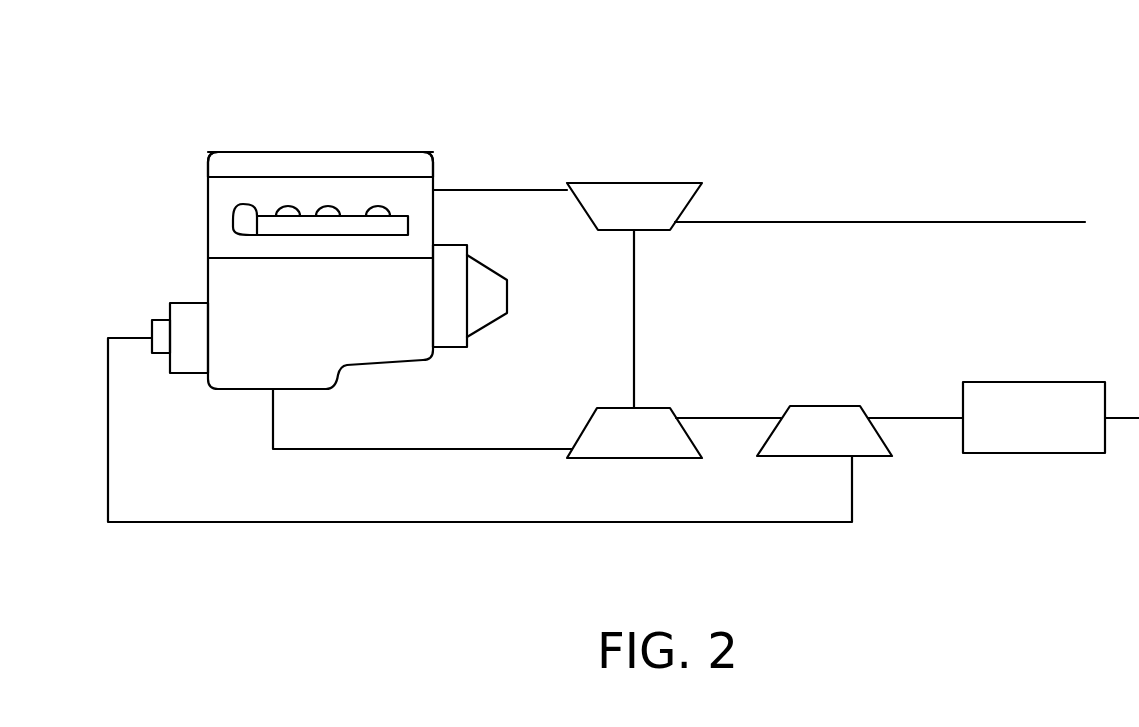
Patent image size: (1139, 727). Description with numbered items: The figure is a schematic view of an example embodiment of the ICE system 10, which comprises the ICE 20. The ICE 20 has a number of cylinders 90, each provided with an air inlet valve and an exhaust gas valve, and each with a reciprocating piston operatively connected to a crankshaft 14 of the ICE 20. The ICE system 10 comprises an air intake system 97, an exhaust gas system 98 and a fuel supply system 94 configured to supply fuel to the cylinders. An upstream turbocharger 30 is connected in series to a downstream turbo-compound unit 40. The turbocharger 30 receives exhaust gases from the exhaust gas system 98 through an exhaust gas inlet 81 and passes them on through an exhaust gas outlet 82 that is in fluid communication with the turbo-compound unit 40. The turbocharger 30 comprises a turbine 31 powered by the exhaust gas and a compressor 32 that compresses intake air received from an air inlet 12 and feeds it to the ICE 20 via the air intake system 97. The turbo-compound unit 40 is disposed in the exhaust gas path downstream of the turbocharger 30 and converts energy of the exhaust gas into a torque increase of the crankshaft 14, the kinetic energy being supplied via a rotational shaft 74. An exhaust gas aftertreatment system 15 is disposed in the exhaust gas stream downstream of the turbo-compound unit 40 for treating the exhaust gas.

The ICE system 10 is at (480, 90).
The air inlet 12 is at (882, 222).
The crankshaft 14 is at (190, 373).
The aftertreatment system 15 is at (1037, 453).
The ICE 20 is at (322, 153).
The turbocharger 30 is at (775, 90).
The turbine 31 is at (637, 458).
The compressor 32 is at (638, 183).
The turbo-compound unit 40 is at (866, 452).
The rotational shaft 74 is at (920, 418).
The exhaust gas inlet 81 is at (552, 449).
The exhaust gas outlet 82 is at (693, 418).
The cylinders 90 is at (248, 167).
The fuel supply system 94 is at (352, 227).
The air intake system 97 is at (508, 190).
The exhaust gas system 98 is at (423, 450).